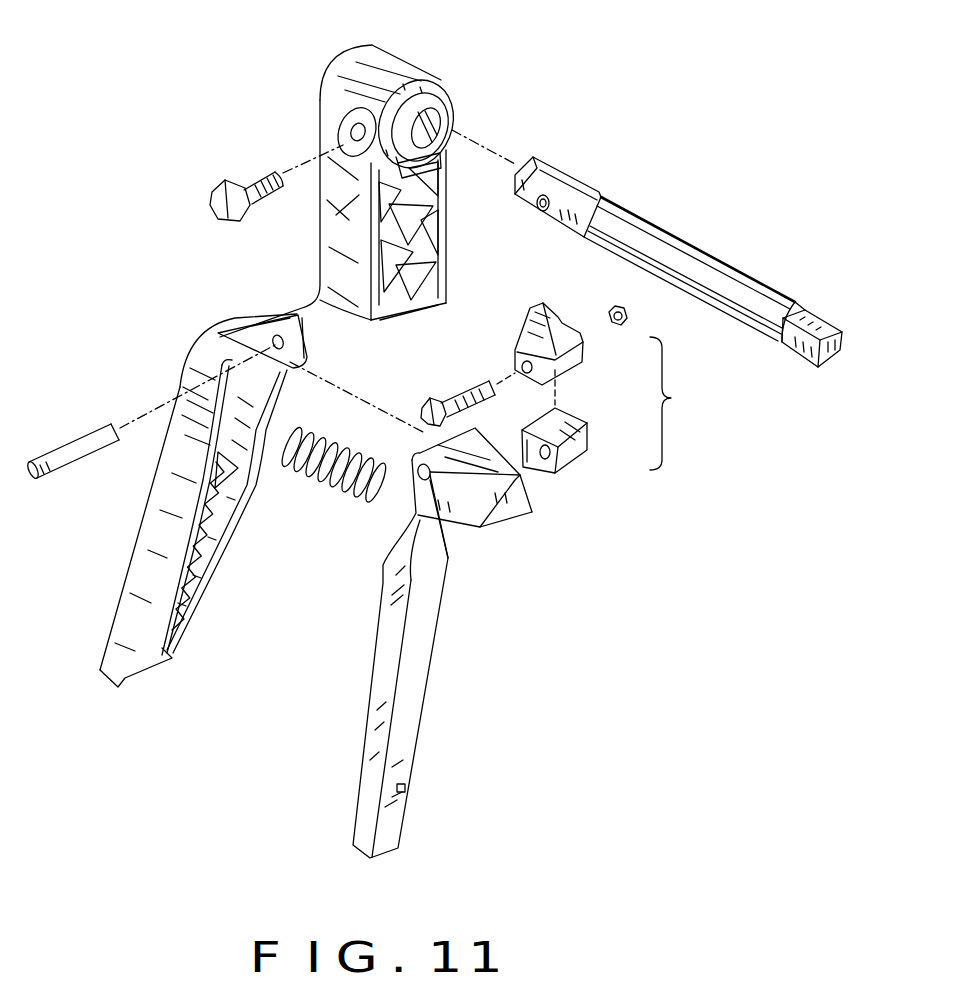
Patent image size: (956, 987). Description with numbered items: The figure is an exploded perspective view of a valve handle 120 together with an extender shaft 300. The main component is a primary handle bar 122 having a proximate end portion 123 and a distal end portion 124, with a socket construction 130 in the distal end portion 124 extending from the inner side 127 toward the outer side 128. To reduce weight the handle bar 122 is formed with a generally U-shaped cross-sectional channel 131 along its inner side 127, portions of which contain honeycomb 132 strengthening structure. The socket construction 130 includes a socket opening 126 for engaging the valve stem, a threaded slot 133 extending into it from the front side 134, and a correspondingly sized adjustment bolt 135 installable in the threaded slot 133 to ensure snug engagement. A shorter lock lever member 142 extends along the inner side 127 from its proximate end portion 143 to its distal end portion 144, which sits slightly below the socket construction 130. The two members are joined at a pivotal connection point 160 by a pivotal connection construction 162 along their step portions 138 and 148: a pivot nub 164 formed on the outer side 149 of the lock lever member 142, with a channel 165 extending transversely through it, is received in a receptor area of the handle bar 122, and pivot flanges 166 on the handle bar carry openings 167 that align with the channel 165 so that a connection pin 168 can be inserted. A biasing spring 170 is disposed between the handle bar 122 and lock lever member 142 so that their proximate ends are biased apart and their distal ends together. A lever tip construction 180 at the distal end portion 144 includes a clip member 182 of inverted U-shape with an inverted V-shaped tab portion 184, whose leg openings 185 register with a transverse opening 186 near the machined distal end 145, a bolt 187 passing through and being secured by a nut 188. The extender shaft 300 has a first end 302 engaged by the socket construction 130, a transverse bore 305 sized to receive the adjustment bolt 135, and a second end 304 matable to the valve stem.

The valve handle 120 is at (432, 53).
The primary handle bar 122 is at (180, 383).
The proximate end portion 123 is at (138, 608).
The distal end portion 124 is at (337, 138).
The socket opening 126 is at (440, 121).
The inner side 127 is at (442, 166).
The outer side 128 is at (320, 250).
The socket construction 130 is at (453, 100).
The U-shaped cross-sectional channel 131 is at (448, 207).
The honeycomb 132 is at (435, 263).
The threaded slot 133 is at (346, 110).
The front side 134 is at (347, 204).
The adjustment bolt 135 is at (215, 188).
The step portion 138 is at (273, 310).
The lock lever member 142 is at (412, 670).
The proximate end portion 143 is at (405, 790).
The distal end portion 144 is at (588, 453).
The distal end 145 is at (580, 410).
The step portion 148 is at (502, 517).
The outer side 149 is at (383, 583).
The pivotal connection point 160 is at (272, 348).
The pivotal connection construction 162 is at (247, 335).
The pivot nub 164 is at (422, 462).
The channel 165 is at (445, 568).
The pivot flanges 166 is at (347, 380).
The openings 167 is at (380, 332).
The connection pin 168 is at (101, 432).
The biasing spring 170 is at (337, 484).
The lever tip construction 180 is at (682, 394).
The clip member 182 is at (525, 310).
The tab portion 184 is at (552, 307).
The openings 185 is at (552, 365).
The transverse opening 186 is at (538, 473).
The bolt 187 is at (470, 404).
The nut 188 is at (628, 313).
The extender shaft 300 is at (658, 218).
The first end 302 is at (577, 176).
The second end 304 is at (818, 310).
The transverse bore 305 is at (524, 202).